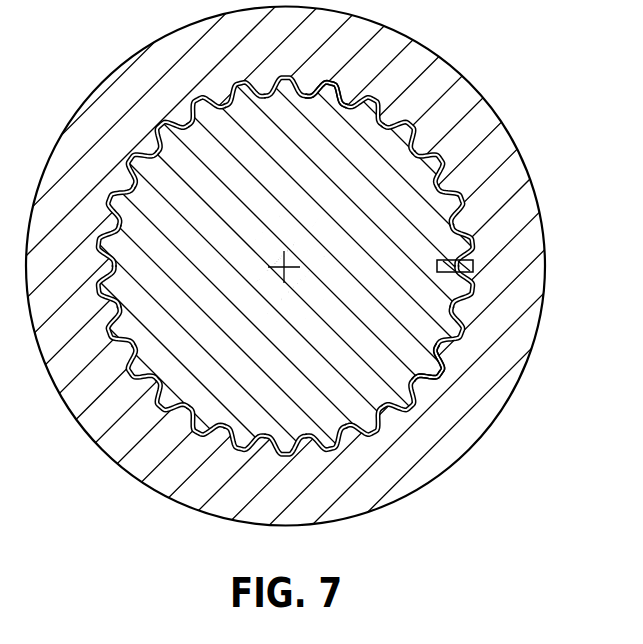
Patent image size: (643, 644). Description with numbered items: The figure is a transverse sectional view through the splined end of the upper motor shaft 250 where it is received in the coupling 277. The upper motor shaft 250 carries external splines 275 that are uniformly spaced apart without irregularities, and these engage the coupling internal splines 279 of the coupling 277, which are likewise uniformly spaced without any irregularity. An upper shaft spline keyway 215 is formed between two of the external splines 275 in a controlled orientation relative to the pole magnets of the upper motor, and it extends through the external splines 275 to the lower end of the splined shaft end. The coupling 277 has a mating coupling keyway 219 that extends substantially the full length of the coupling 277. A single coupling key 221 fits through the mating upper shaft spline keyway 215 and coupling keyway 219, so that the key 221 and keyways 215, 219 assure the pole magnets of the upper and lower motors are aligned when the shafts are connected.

The upper shaft spline keyway 215 is at (475, 297).
The coupling keyway 219 is at (474, 268).
The coupling key 221 is at (473, 272).
The upper motor shaft 250 is at (420, 213).
The external splines 275 is at (342, 88).
The coupling 277 is at (463, 100).
The coupling internal splines 279 is at (425, 367).